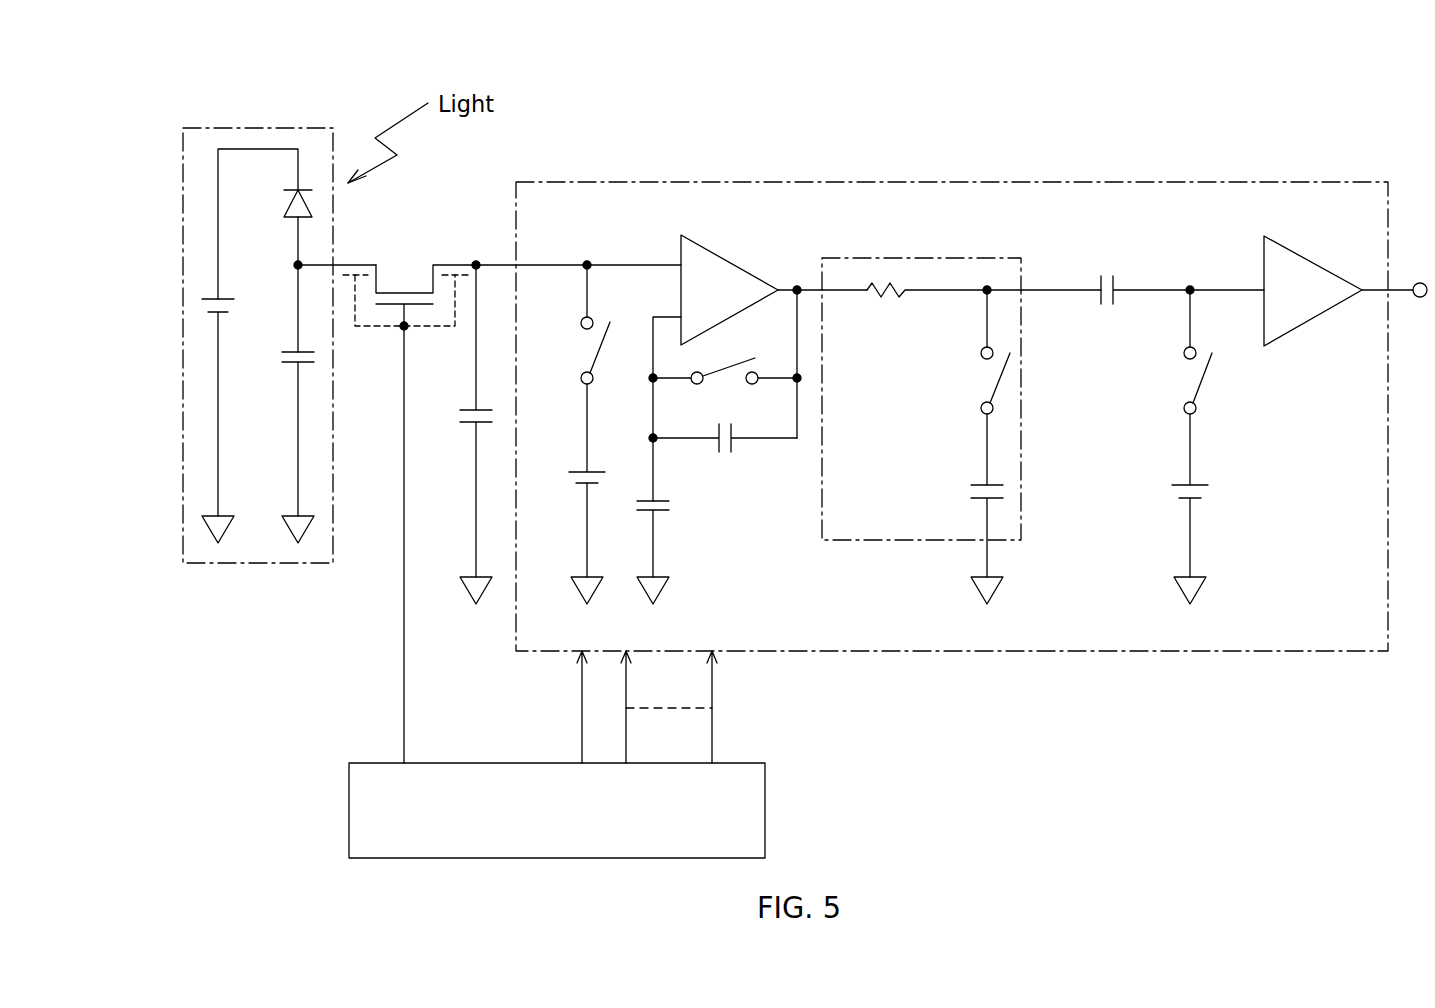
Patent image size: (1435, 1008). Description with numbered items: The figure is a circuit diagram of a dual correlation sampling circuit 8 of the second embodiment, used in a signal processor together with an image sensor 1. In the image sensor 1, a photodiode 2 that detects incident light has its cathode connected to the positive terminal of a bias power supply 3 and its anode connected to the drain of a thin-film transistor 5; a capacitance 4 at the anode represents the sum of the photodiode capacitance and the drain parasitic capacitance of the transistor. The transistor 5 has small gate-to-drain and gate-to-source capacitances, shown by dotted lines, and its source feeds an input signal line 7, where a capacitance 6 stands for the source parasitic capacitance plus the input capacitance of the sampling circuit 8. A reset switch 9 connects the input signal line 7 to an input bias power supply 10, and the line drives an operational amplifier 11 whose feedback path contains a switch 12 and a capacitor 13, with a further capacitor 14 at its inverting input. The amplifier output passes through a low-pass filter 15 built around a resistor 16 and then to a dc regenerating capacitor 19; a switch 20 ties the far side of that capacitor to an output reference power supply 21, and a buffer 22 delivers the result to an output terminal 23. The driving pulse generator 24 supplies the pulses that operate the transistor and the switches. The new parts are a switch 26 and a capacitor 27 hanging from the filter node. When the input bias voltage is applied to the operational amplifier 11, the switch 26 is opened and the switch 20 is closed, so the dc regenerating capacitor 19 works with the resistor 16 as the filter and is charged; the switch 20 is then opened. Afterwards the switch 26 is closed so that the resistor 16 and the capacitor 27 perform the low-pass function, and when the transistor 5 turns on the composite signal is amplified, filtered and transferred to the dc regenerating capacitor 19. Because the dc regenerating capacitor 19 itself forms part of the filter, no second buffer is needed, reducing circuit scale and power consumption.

The image sensor 1 is at (231, 127).
The photodiode 2 is at (284, 199).
The bias power supply 3 is at (234, 300).
The capacitance 4 is at (284, 359).
The thin-film transistor 5 is at (406, 260).
The capacitance 6 is at (460, 420).
The input signal line 7 is at (546, 262).
The dual correlation sampling circuit 8 is at (856, 652).
The reset switch 9 is at (583, 344).
The input bias power supply 10 is at (572, 480).
The operational amplifier 11 is at (746, 276).
The switch 12 is at (764, 366).
The capacitor 13 is at (737, 445).
The capacitor 14 is at (672, 508).
The low-pass filter 15 is at (917, 258).
The resistor 16 is at (886, 306).
The dc regenerating capacitor 19 is at (1102, 275).
The switch 20 is at (1182, 382).
The output reference power supply 21 is at (1212, 491).
The buffer 22 is at (1310, 322).
The output terminal 23 is at (1415, 282).
The driving pulse generator 24 is at (349, 812).
The switch 26 is at (978, 383).
The capacitor 27 is at (1004, 492).